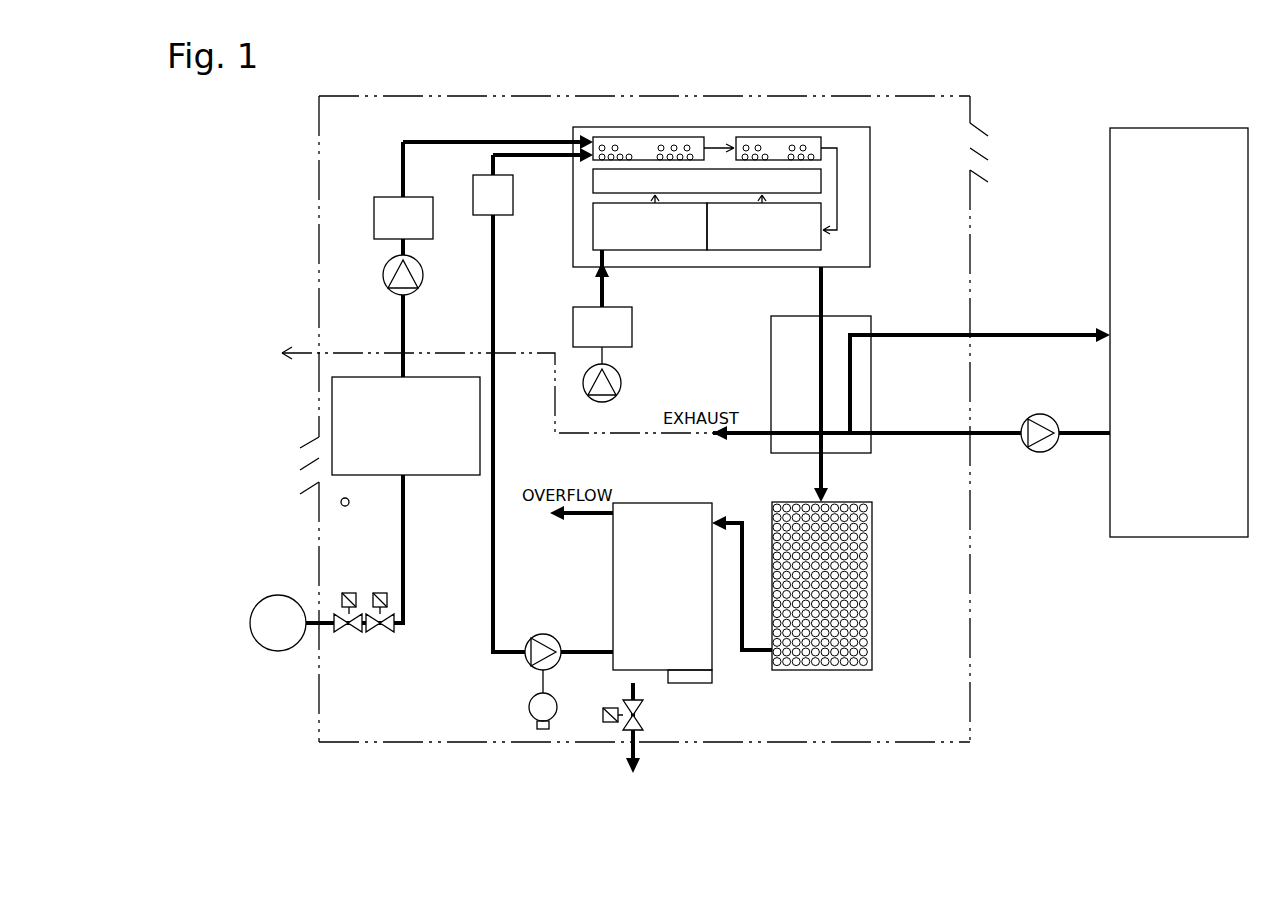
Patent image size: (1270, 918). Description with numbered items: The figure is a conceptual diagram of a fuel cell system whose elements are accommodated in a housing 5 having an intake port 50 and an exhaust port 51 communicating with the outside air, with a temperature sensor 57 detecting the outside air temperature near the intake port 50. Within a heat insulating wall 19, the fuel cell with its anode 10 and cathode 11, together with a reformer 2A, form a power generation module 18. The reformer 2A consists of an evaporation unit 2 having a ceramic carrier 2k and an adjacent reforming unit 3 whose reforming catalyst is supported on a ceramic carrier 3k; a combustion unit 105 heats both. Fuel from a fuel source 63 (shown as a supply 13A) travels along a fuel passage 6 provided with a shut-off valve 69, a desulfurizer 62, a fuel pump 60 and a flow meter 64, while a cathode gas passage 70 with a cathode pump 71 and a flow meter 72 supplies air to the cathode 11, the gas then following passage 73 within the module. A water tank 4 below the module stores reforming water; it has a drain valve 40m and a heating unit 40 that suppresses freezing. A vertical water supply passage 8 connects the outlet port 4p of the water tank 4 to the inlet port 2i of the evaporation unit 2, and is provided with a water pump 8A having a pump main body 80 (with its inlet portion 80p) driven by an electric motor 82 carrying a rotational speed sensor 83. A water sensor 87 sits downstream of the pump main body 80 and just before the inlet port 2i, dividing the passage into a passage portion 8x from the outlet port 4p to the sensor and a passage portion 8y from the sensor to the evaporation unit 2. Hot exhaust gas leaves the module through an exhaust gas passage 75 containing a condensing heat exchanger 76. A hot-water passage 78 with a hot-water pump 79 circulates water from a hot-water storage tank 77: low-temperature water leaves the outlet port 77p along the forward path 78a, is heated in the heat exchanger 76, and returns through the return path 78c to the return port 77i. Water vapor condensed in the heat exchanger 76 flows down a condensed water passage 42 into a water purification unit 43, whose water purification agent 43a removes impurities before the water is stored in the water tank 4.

The evaporation unit 2 is at (648, 150).
The reformer 2A is at (702, 129).
The inlet port 2i is at (583, 135).
The ceramic carrier 2k is at (662, 140).
The reforming unit 3 is at (778, 150).
The ceramic carrier 3k is at (795, 140).
The water tank 4 is at (665, 501).
The outlet port 4p is at (611, 650).
The housing 5 is at (318, 183).
The fuel passage 6 is at (405, 531).
The water supply passage 8 is at (496, 446).
The water pump 8A is at (537, 633).
The passage portion 8x is at (496, 471).
The passage portion 8y is at (537, 158).
The anode 10 is at (764, 222).
The cathode 11 is at (650, 222).
The fuel gas source 13A is at (278, 623).
The power generation module 18 is at (870, 160).
The heat insulating wall 19 is at (870, 128).
The heating unit 40 is at (698, 683).
The drain valve 40m is at (645, 716).
The condensed water passage 42 is at (825, 474).
The water purification unit 43 is at (873, 558).
The water purification agent 43a is at (864, 634).
The intake port 50 is at (296, 463).
The exhaust port 51 is at (988, 170).
The temperature sensor 57 is at (345, 506).
The fuel pump 60 is at (416, 292).
The desulfurizer 62 is at (406, 426).
The fuel source 63 is at (283, 596).
The flow meter 64 is at (372, 240).
The shut-off valve 69 is at (372, 633).
The cathode gas passage 70 is at (606, 292).
The cathode pump 71 is at (621, 383).
The flow meter 72 is at (632, 330).
The gas passage 73 is at (840, 208).
The exhaust gas passage 75 is at (360, 350).
The heat exchanger 76 is at (771, 352).
The hot-water storage tank 77 is at (1179, 332).
The return port 77i is at (1105, 330).
The outlet port 77p is at (1104, 440).
The hot-water passage 78 is at (918, 440).
The forward path 78a is at (990, 440).
The return path 78c is at (990, 333).
The hot-water pump 79 is at (1040, 453).
The pump main body 80 is at (532, 665).
The pump portion 80p is at (526, 648).
The electric motor 82 is at (530, 711).
The rotational speed sensor 83 is at (566, 716).
The water sensor 87 is at (505, 215).
The combustion unit 105 is at (707, 181).